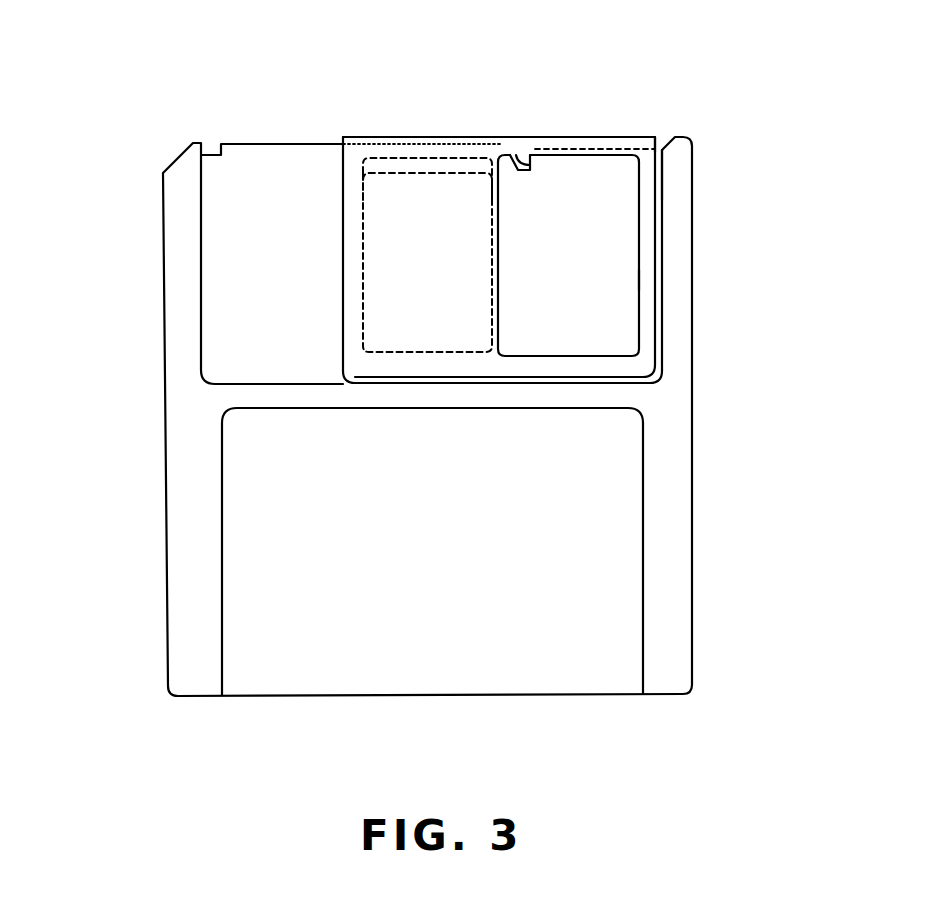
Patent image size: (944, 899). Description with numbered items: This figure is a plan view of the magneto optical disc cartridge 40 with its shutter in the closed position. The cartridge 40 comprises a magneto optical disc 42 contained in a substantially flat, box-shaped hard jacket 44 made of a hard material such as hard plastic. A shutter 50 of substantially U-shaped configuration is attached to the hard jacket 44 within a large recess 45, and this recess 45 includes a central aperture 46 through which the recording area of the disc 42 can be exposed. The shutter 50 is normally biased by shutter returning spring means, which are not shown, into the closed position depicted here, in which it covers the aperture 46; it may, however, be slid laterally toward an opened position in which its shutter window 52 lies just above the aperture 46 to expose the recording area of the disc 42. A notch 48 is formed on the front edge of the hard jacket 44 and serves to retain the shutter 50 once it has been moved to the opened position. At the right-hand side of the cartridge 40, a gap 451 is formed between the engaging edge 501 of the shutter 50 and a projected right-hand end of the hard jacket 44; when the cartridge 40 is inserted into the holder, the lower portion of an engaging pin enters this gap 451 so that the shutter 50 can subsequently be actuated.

The magneto optical disc cartridge 40 is at (434, 355).
The magneto optical disc 42 is at (405, 195).
The hard jacket 44 is at (174, 323).
The large recess 45 is at (281, 269).
The gap 451 is at (665, 138).
The central aperture 46 is at (370, 218).
The notch 48 is at (518, 147).
The shutter 50 is at (582, 147).
The engaging edge 501 is at (660, 136).
The shutter window 52 is at (640, 288).